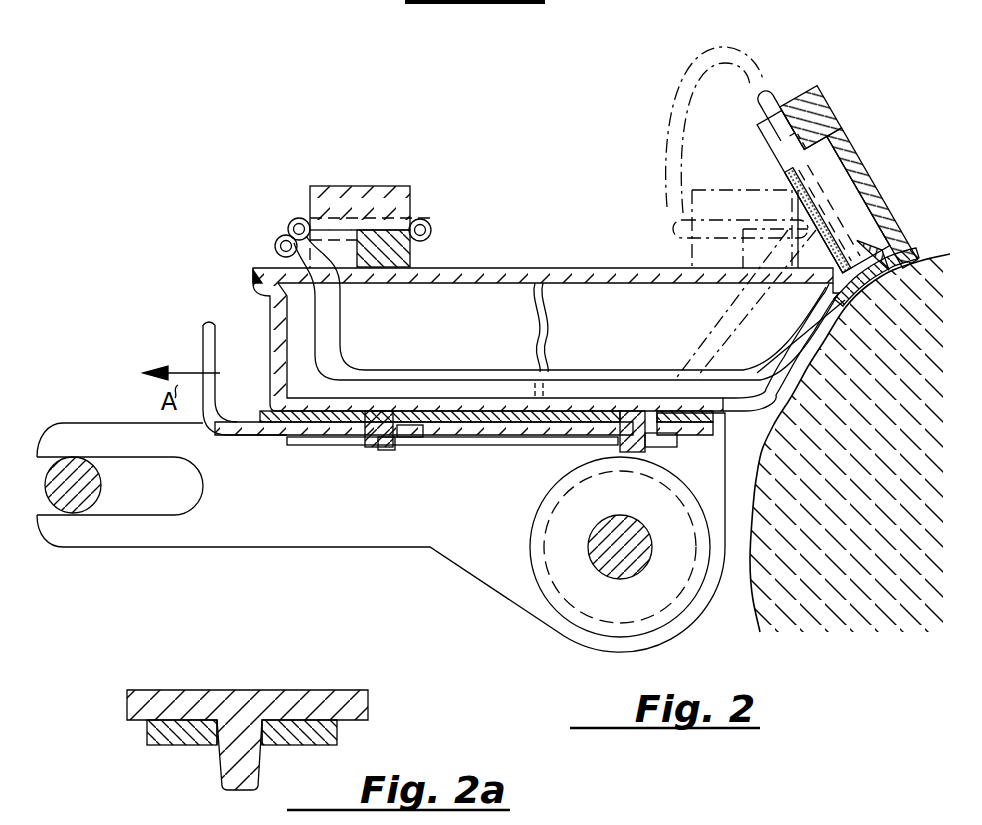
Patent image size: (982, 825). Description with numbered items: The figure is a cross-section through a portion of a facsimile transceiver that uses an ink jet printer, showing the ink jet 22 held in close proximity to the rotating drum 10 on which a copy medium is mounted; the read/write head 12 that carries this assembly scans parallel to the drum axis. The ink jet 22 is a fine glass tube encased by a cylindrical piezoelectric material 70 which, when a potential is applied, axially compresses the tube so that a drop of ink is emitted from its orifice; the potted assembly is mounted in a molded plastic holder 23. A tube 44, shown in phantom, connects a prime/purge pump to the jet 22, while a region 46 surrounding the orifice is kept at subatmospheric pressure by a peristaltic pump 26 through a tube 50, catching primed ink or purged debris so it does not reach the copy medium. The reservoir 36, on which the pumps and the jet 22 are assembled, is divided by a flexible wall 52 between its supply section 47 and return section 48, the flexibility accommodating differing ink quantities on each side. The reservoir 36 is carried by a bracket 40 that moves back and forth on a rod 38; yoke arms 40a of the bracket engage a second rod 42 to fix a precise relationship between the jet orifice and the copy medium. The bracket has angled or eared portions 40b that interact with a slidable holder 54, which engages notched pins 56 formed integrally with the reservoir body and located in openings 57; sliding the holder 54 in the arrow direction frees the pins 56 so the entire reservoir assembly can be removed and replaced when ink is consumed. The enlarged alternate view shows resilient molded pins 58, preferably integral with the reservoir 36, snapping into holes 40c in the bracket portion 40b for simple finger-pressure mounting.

In FIG. 2, the drum 10 is at (837, 582).
In FIG. 2, the read/write head 12 is at (238, 295).
In FIG. 2, the ink jet 22 is at (855, 203).
In FIG. 2, the holder 23 is at (855, 160).
In FIG. 2, the peristaltic pump 26 is at (362, 202).
In FIG. 2, the reservoir 36 is at (500, 270).
In FIG. 2A, the reservoir 36 is at (360, 706).
In FIG. 2, the rod 38 is at (610, 547).
In FIG. 2, the bracket 40 is at (326, 501).
In FIG. 2, the yoke arms 40a is at (135, 448).
In FIG. 2, the angled or eared portions 40b is at (262, 414).
In FIG. 2A, the angled or eared portions 40b is at (340, 735).
In FIG. 2A, the holes 40c is at (200, 718).
In FIG. 2, the second rod 42 is at (73, 468).
In FIG. 2, the tube 44 is at (667, 115).
In FIG. 2, the region 46 is at (910, 257).
In FIG. 2, the supply section 47 is at (616, 317).
In FIG. 2, the return section 48 is at (430, 312).
In FIG. 2, the tube 50 is at (333, 350).
In FIG. 2, the wall 52 is at (525, 328).
In FIG. 2, the slidable holder 54 is at (205, 343).
In FIG. 2, the pins 56 is at (387, 450).
In FIG. 2, the openings 57 is at (413, 430).
In FIG. 2A, the molded pins 58 is at (238, 778).
In FIG. 2, the piezoelectric material 70 is at (827, 145).